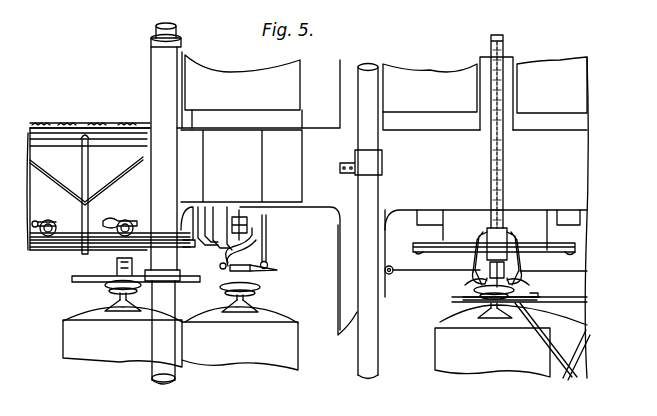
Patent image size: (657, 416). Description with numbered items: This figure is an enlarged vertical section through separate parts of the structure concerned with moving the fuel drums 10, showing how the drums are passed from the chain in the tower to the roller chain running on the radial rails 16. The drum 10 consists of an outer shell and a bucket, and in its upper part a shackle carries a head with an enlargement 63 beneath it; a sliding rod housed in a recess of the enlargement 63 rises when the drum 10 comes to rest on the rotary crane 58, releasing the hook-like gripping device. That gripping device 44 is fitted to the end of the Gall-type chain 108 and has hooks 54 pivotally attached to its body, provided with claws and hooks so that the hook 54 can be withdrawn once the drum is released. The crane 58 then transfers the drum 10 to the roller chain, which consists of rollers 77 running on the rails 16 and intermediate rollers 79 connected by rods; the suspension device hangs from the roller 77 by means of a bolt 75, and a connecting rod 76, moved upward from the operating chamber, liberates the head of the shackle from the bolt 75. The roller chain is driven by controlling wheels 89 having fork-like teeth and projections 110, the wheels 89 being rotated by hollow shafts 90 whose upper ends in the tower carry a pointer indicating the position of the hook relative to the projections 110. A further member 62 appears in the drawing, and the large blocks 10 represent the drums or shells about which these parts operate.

The drum 10 is at (300, 94).
The hollow shaft 90 is at (160, 82).
The intermediate roller 79 is at (47, 220).
The roller 77 is at (126, 220).
The radial rail 16 is at (104, 243).
The controlling wheel 89 is at (75, 277).
The enlargement 63 is at (105, 288).
The projection 110 is at (222, 268).
The connecting rod 76 is at (268, 238).
The bolt 75 is at (255, 271).
The chain 108 is at (503, 166).
The hook-like gripping device 44 is at (505, 238).
The hook 54 is at (480, 272).
The lower beam 62 is at (545, 301).
The rotary crane 58 is at (480, 300).